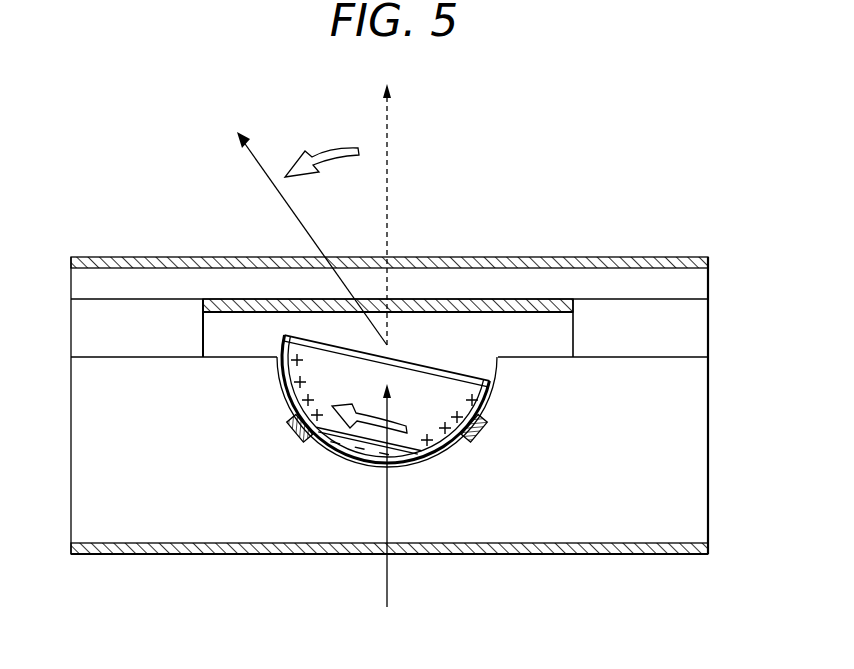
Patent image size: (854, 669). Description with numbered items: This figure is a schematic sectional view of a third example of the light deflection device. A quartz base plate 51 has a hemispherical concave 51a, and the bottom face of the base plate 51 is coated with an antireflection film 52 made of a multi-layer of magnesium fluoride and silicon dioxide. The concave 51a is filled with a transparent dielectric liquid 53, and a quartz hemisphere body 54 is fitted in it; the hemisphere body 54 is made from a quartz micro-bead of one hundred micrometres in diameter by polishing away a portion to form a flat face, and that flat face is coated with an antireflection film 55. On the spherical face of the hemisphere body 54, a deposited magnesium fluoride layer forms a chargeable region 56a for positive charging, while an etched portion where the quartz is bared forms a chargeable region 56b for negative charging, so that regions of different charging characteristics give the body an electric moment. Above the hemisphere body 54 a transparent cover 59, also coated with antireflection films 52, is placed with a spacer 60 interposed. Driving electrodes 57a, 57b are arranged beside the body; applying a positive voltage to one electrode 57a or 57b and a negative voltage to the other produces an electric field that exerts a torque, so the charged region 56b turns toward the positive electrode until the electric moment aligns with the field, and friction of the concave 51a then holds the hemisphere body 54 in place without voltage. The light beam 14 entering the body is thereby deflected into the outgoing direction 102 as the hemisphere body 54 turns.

The light beam 14 is at (389, 580).
The quartz base plate 51 is at (697, 395).
The hemispherical concave 51a is at (432, 460).
The antireflection film 52 is at (529, 305).
The transparent dielectric liquid 53 is at (282, 392).
The hemisphere body 54 is at (405, 382).
The antireflection film 55 is at (452, 372).
The chargeable region 56a is at (497, 410).
The chargeable region 56b is at (355, 453).
The driving electrode 57a is at (291, 441).
The driving electrode 57b is at (489, 440).
The transparent cover 59 is at (697, 283).
The spacer 60 is at (697, 328).
The reflected light beam 102 is at (298, 222).